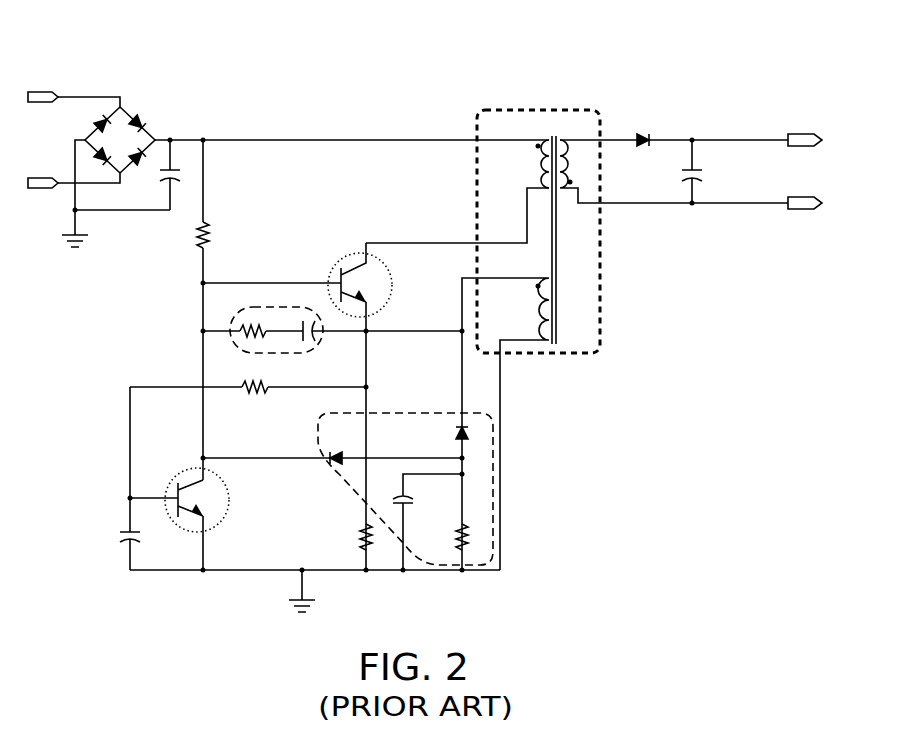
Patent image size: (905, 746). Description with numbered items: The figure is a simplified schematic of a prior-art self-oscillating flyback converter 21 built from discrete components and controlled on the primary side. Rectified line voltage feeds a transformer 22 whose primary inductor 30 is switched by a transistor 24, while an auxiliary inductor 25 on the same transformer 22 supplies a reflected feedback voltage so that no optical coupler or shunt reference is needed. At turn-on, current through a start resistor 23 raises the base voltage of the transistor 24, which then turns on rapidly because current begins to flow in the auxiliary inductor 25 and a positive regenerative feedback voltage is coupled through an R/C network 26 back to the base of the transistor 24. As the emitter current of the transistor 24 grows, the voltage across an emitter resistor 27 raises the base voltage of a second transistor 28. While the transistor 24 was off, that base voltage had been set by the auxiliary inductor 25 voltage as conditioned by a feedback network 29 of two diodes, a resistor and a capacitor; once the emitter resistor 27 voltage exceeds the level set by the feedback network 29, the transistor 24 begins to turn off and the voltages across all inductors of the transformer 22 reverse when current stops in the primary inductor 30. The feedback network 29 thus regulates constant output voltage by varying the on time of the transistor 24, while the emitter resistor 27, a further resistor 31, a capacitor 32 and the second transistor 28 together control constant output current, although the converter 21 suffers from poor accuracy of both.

The self-oscillating flyback converter 21 is at (463, 56).
The transformer 22 is at (517, 110).
The start resistor R_START 23 is at (209, 238).
The transistor Q1 24 is at (340, 262).
The auxiliary inductor 25 is at (505, 414).
The R/C network 26 is at (252, 310).
The emitter resistor R_E 27 is at (360, 543).
The second transistor Q2 28 is at (177, 479).
The feedback network 29 is at (432, 413).
The primary inductor 30 is at (530, 153).
The resistor R2 31 is at (256, 397).
The capacitor C2 32 is at (118, 534).